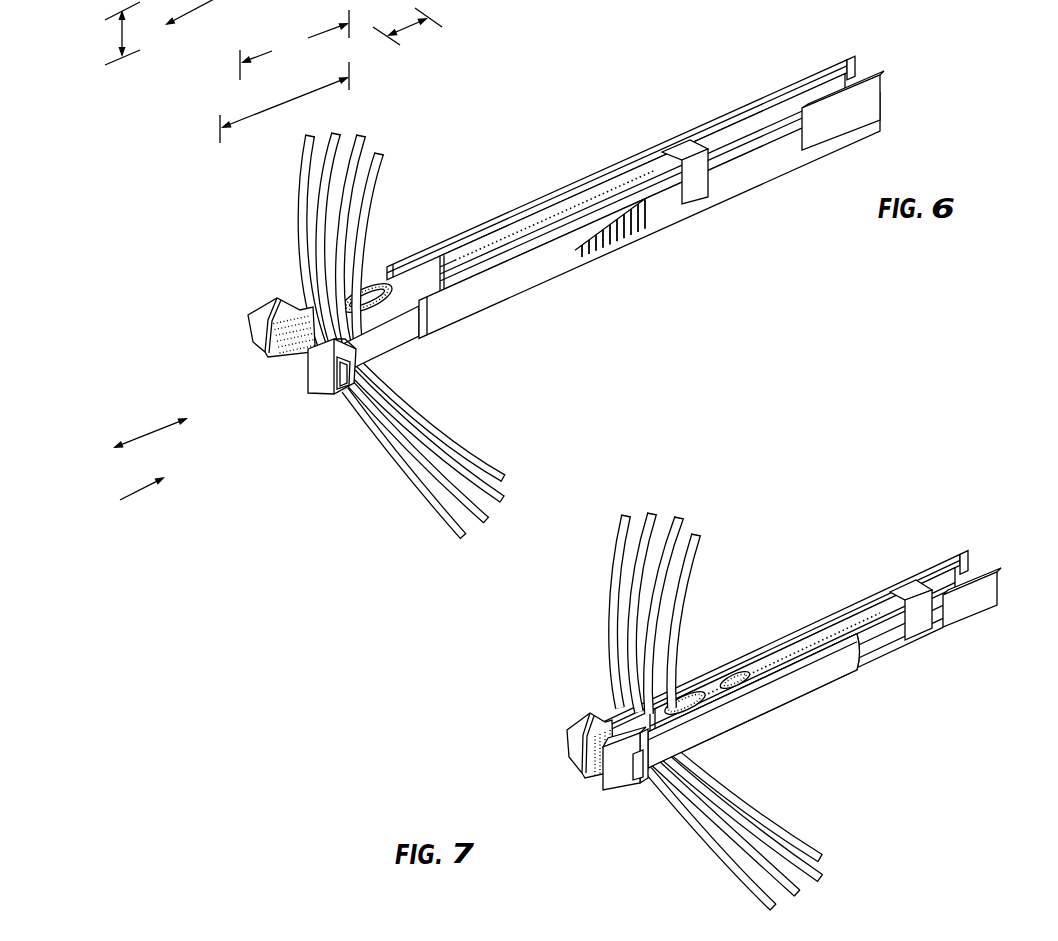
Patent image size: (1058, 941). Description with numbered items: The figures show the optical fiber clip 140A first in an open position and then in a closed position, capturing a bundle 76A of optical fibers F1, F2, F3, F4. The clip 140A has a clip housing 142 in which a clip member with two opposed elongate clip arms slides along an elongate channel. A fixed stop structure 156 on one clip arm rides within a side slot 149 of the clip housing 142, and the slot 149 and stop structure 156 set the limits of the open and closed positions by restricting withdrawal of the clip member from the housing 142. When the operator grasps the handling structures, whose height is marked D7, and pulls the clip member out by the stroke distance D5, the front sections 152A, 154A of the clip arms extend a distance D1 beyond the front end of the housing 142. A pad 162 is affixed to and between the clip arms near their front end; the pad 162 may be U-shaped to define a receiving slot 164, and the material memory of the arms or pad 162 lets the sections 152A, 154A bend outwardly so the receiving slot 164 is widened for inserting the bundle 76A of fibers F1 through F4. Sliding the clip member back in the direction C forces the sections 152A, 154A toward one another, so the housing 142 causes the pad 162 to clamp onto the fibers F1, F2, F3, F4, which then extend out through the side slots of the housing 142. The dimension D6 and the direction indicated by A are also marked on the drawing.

In FIG. 6, the clip 140A is at (597, 85).
In FIG. 7, the clip 140A is at (870, 540).
In FIG. 6, the clip housing 142 is at (545, 267).
In FIG. 6, the side slot 149 is at (812, 155).
In FIG. 6, the section of clip arm 152A is at (373, 268).
In FIG. 6, the section of clip arm 154A is at (380, 338).
In FIG. 6, the stop structure 156 is at (697, 190).
In FIG. 6, the pad 162 is at (300, 397).
In FIG. 7, the pad 162 is at (685, 700).
In FIG. 6, the receiving slot 164 is at (250, 382).
In FIG. 6, the bundle of optical fibers 76A is at (432, 412).
In FIG. 7, the bundle of optical fibers 76A is at (750, 796).
In FIG. 6, the optical fiber F1 is at (372, 196).
In FIG. 6, the optical fiber F2 is at (357, 145).
In FIG. 6, the optical fiber F3 is at (318, 228).
In FIG. 6, the optical fiber F4 is at (303, 207).
In FIG. 6, the distance D1 is at (281, 104).
In FIG. 6, the stroke distance D5 is at (294, 45).
In FIG. 6, the dimension D6 is at (114, 33).
In FIG. 6, the height D7 is at (407, 34).
In FIG. 6, the section direction A is at (152, 432).
In FIG. 6, the direction C is at (133, 498).